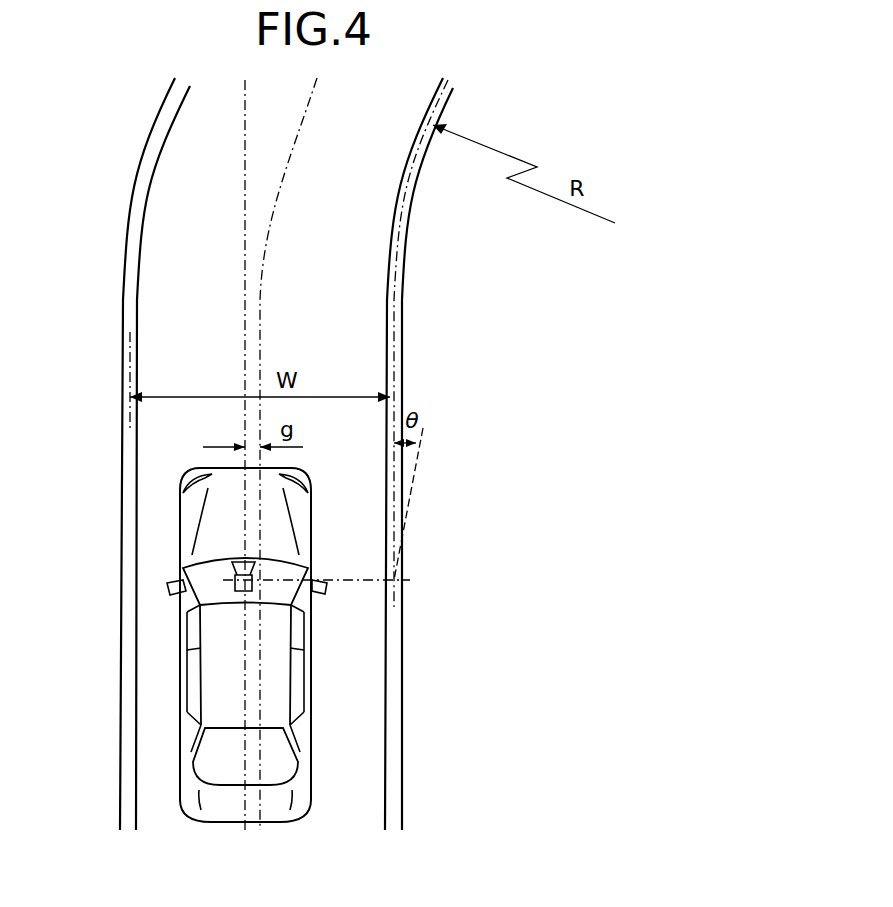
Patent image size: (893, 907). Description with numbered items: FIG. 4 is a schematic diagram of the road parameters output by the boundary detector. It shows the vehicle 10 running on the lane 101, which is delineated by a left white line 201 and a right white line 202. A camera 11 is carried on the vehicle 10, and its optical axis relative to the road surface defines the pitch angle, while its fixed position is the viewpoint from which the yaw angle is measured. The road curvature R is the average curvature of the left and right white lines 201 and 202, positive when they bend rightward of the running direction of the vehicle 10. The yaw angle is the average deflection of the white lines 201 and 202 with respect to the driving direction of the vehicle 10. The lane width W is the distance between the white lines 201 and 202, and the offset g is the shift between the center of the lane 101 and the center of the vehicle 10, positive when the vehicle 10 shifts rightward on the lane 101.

The vehicle 10 is at (190, 526).
The camera 11 is at (183, 590).
The lane 101 is at (365, 622).
The left white line 201 is at (127, 289).
The right white line 202 is at (395, 323).